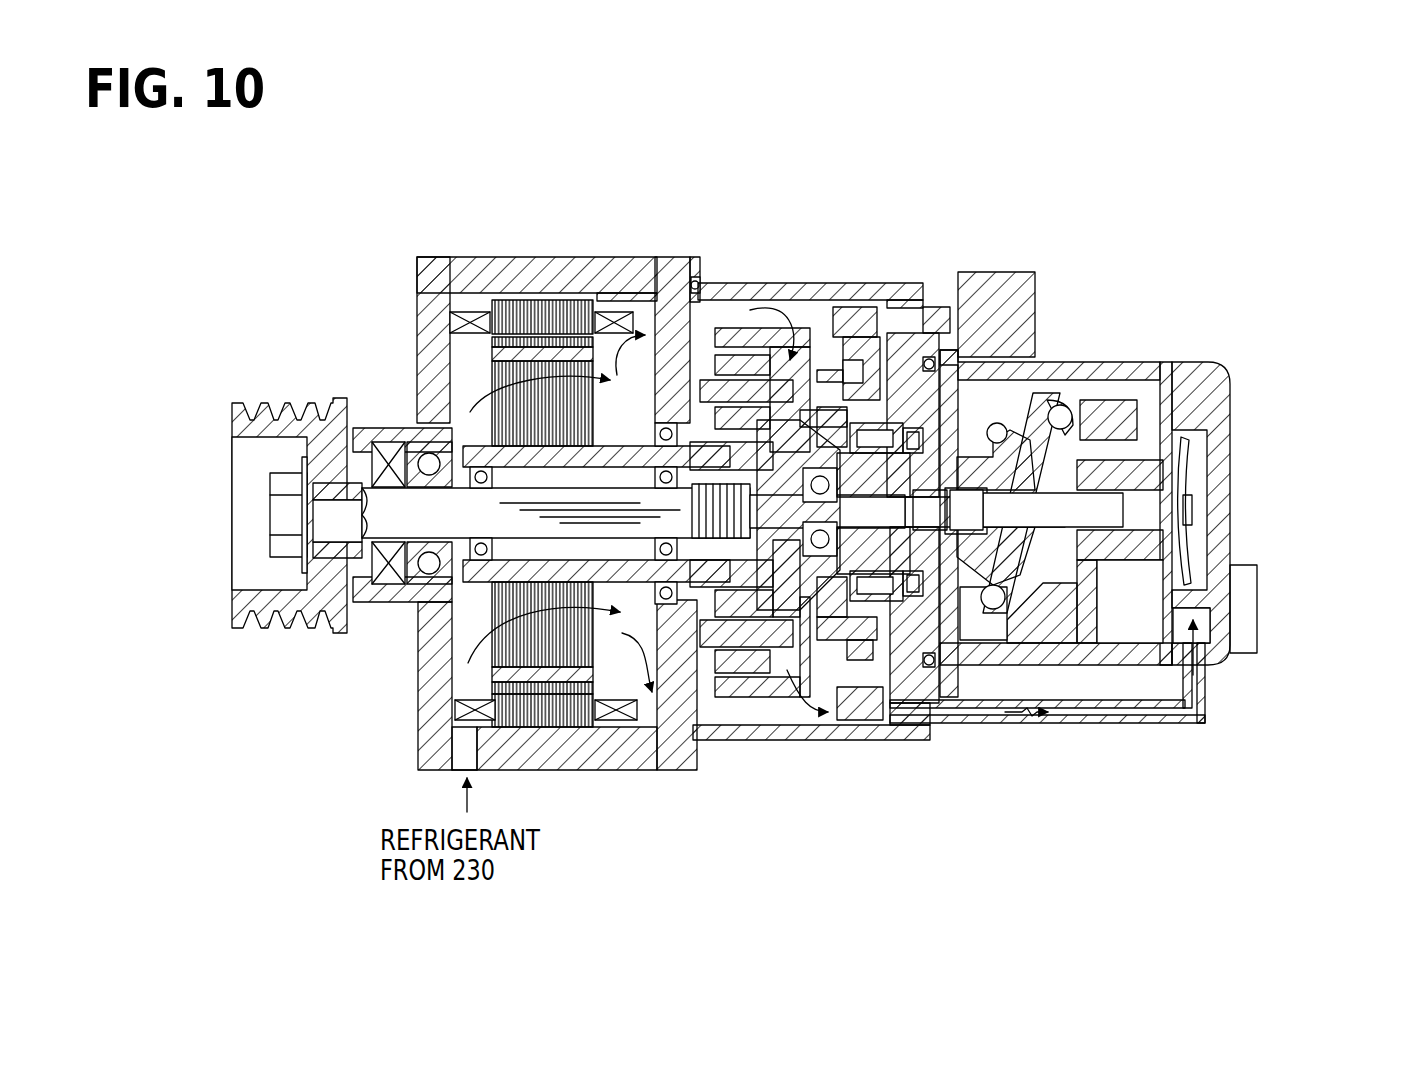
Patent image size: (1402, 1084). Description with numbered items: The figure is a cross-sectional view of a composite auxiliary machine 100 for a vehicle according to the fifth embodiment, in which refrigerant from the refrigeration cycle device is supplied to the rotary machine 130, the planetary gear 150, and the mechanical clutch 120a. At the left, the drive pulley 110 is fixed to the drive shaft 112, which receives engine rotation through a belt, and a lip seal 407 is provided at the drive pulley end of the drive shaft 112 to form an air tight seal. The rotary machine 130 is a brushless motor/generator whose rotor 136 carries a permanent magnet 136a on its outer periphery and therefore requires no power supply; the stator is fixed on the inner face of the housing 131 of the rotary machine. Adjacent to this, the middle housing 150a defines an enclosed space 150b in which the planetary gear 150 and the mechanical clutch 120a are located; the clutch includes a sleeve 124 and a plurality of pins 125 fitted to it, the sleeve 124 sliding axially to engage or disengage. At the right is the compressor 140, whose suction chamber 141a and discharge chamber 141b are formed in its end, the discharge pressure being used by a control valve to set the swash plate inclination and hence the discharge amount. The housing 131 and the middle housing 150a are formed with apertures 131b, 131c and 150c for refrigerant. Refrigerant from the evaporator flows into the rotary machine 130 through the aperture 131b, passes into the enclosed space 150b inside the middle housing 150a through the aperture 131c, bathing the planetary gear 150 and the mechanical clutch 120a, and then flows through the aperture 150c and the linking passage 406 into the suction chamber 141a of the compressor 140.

The composite auxiliary machine 100 is at (404, 303).
The drive pulley 110 is at (232, 420).
The drive shaft 112 is at (385, 520).
The mechanical clutch 120a is at (888, 172).
The sleeve 124 is at (823, 377).
The pins 125 is at (817, 340).
The rotary machine 130 is at (507, 255).
The housing of the rotary machine 131 is at (665, 272).
The aperture 131b is at (426, 742).
The aperture 131c is at (673, 327).
The rotor 136 is at (580, 655).
The permanent magnet 136a is at (540, 690).
The compressor 140 is at (1086, 360).
The suction chamber 141a is at (1200, 620).
The discharge chamber 141b is at (1195, 460).
The planetary gear 150 is at (731, 323).
The middle housing 150a is at (905, 275).
The enclosed space 150b is at (762, 710).
The aperture 150c is at (903, 723).
The linking passage 406 is at (1047, 724).
The lip seal 407 is at (388, 600).